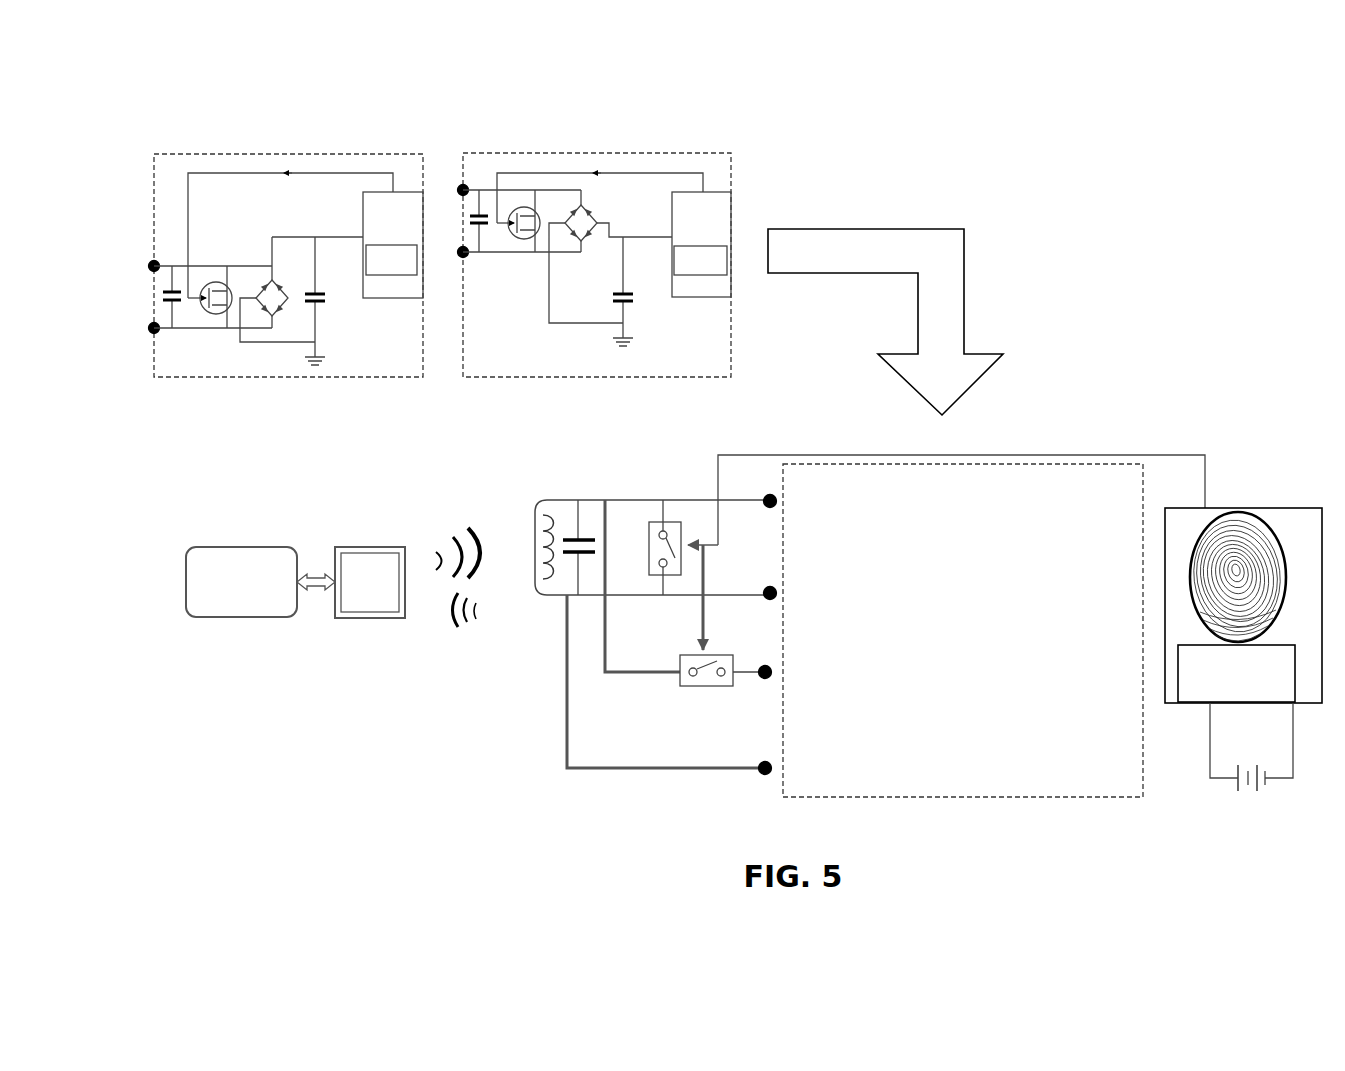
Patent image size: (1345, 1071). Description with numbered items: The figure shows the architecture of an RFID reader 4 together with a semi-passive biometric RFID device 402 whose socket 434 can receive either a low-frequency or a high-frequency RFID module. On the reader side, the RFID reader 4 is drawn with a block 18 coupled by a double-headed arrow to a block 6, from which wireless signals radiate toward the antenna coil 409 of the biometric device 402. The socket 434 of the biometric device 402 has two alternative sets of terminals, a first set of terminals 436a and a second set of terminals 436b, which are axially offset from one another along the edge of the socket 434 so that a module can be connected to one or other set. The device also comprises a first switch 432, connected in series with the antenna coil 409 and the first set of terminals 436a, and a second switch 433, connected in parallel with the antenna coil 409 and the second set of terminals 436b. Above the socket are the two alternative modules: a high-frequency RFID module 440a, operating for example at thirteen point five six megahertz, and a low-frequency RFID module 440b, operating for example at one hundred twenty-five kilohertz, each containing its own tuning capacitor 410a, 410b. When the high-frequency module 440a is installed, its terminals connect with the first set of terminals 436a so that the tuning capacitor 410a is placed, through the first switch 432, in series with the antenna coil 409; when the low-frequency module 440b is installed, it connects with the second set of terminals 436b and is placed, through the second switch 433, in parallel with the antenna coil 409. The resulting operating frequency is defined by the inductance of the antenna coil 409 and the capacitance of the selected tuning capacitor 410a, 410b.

The RFID reader 4 is at (300, 522).
The antenna / communication module 6 is at (370, 618).
The controller 18 is at (228, 617).
The biometric device 402 is at (1108, 372).
The antenna coil 409 is at (535, 548).
The tuning capacitor 410a is at (174, 302).
The tuning capacitor 410b is at (481, 212).
The first switch 432 is at (697, 687).
The second switch 433 is at (655, 522).
The socket 434 is at (939, 636).
The first set of terminals 436a is at (762, 768).
The second set of terminals 436b is at (768, 590).
The high-frequency RFID module 440a is at (365, 132).
The low-frequency RFID module 440b is at (697, 132).